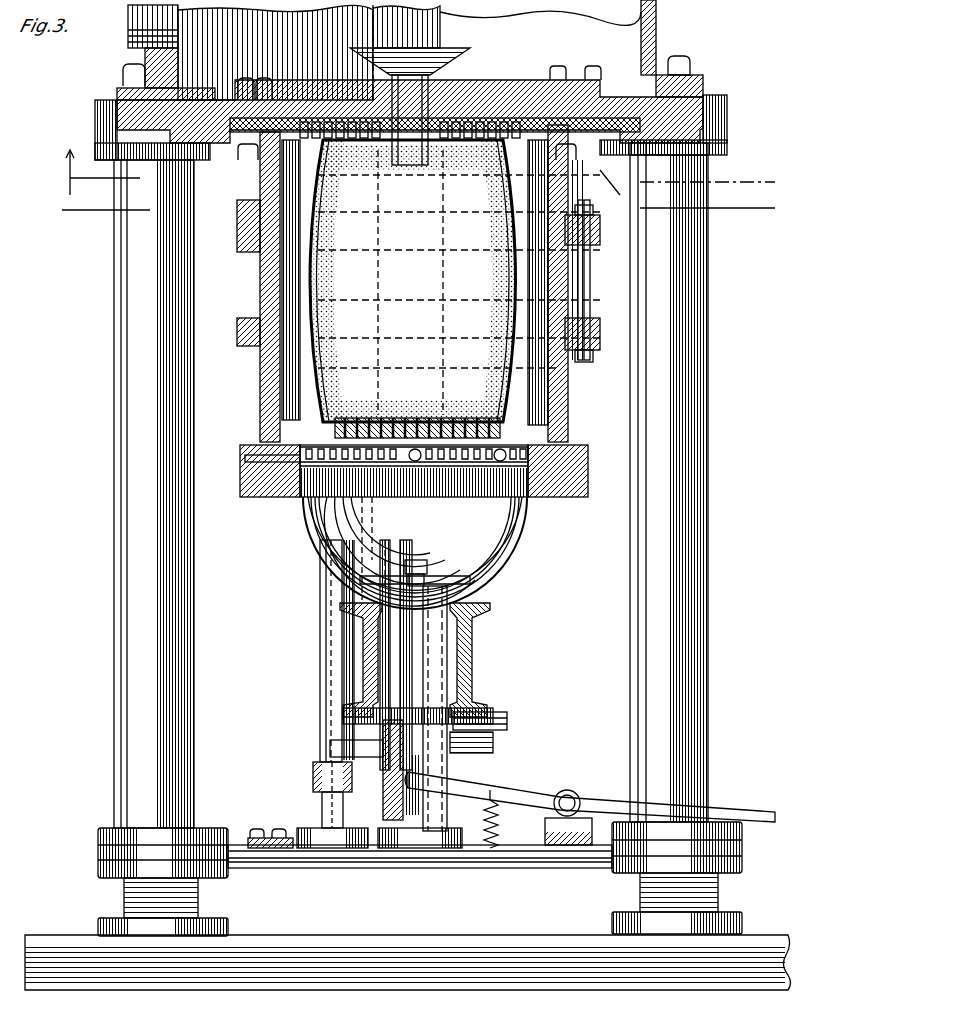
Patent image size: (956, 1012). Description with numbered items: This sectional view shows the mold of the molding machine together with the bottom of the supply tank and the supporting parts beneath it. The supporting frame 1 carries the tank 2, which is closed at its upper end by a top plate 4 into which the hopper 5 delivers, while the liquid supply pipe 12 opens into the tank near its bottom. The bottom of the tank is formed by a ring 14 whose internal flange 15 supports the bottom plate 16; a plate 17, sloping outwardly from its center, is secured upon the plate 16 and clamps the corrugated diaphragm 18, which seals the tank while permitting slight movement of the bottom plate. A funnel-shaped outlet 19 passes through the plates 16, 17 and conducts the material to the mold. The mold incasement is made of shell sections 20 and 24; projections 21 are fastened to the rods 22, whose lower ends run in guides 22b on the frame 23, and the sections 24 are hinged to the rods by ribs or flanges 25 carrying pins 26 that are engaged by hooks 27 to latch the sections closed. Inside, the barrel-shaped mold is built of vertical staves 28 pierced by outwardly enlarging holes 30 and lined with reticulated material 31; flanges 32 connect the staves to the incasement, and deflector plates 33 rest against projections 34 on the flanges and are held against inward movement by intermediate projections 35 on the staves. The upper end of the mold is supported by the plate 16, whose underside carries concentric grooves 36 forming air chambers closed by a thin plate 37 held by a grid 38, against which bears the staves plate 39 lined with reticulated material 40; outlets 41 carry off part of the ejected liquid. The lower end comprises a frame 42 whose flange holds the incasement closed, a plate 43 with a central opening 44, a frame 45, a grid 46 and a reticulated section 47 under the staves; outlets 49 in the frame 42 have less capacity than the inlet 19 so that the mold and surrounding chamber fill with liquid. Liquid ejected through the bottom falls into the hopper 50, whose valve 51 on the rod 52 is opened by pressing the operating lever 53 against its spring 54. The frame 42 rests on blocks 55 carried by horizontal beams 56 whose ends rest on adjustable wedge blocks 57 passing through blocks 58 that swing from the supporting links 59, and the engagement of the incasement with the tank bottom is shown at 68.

The supporting frame 1 is at (122, 355).
The container or tank 2 is at (658, 40).
The top plate 4 is at (414, 172).
The hopper 5 is at (414, 209).
The liquid supply pipe 12 is at (140, 40).
The ring or frame piece 14 is at (728, 102).
The internal flange 15 is at (700, 148).
The bottom plate 16 is at (700, 82).
The plate 17 is at (462, 78).
The diaphragm 18 is at (688, 62).
The funnel-shaped outlet 19 is at (428, 60).
The incasement sections 20 is at (262, 378).
The projections 21 is at (252, 318).
The rods 22 is at (325, 700).
The guides 22b is at (312, 803).
The frame 23 is at (422, 858).
The incasement sections 24 is at (565, 160).
The ribs or flanges 25 is at (570, 215).
The pins 26 is at (590, 276).
The hooks 27 is at (610, 236).
The staves 28 is at (290, 405).
The holes 30 is at (262, 355).
The reticulated material section 31 is at (318, 305).
The extensions or flanges 32 is at (268, 418).
The deflector plates 33 is at (330, 402).
The projections 34 is at (340, 352).
The intermediate projections 35 is at (380, 418).
The concentric grooves or channels 36 is at (525, 80).
The thin metallic plate 37 is at (378, 76).
The frame or grid 38 is at (560, 82).
The staves plate 39 is at (432, 152).
The reticulated material section 40 is at (458, 150).
The outlets 41 is at (120, 92).
The supporting frame 42 is at (262, 497).
The plate 43 is at (534, 520).
The central opening 44 is at (400, 492).
The frame 45 is at (490, 458).
The frame or grid 46 is at (458, 410).
The reticulated material section 47 is at (425, 415).
The outlets 49 is at (270, 455).
The hopper 50 is at (498, 540).
The valve 51 is at (490, 592).
The rod 52 is at (432, 680).
The operating lever 53 is at (478, 790).
The spring 54 is at (498, 838).
The supporting blocks 55 is at (520, 568).
The horizontal beams 56 is at (362, 650).
The adjustable wedge blocks 57 is at (493, 740).
The blocks 58 is at (388, 805).
The supporting links 59 is at (390, 55).
The engagement 68 is at (270, 162).